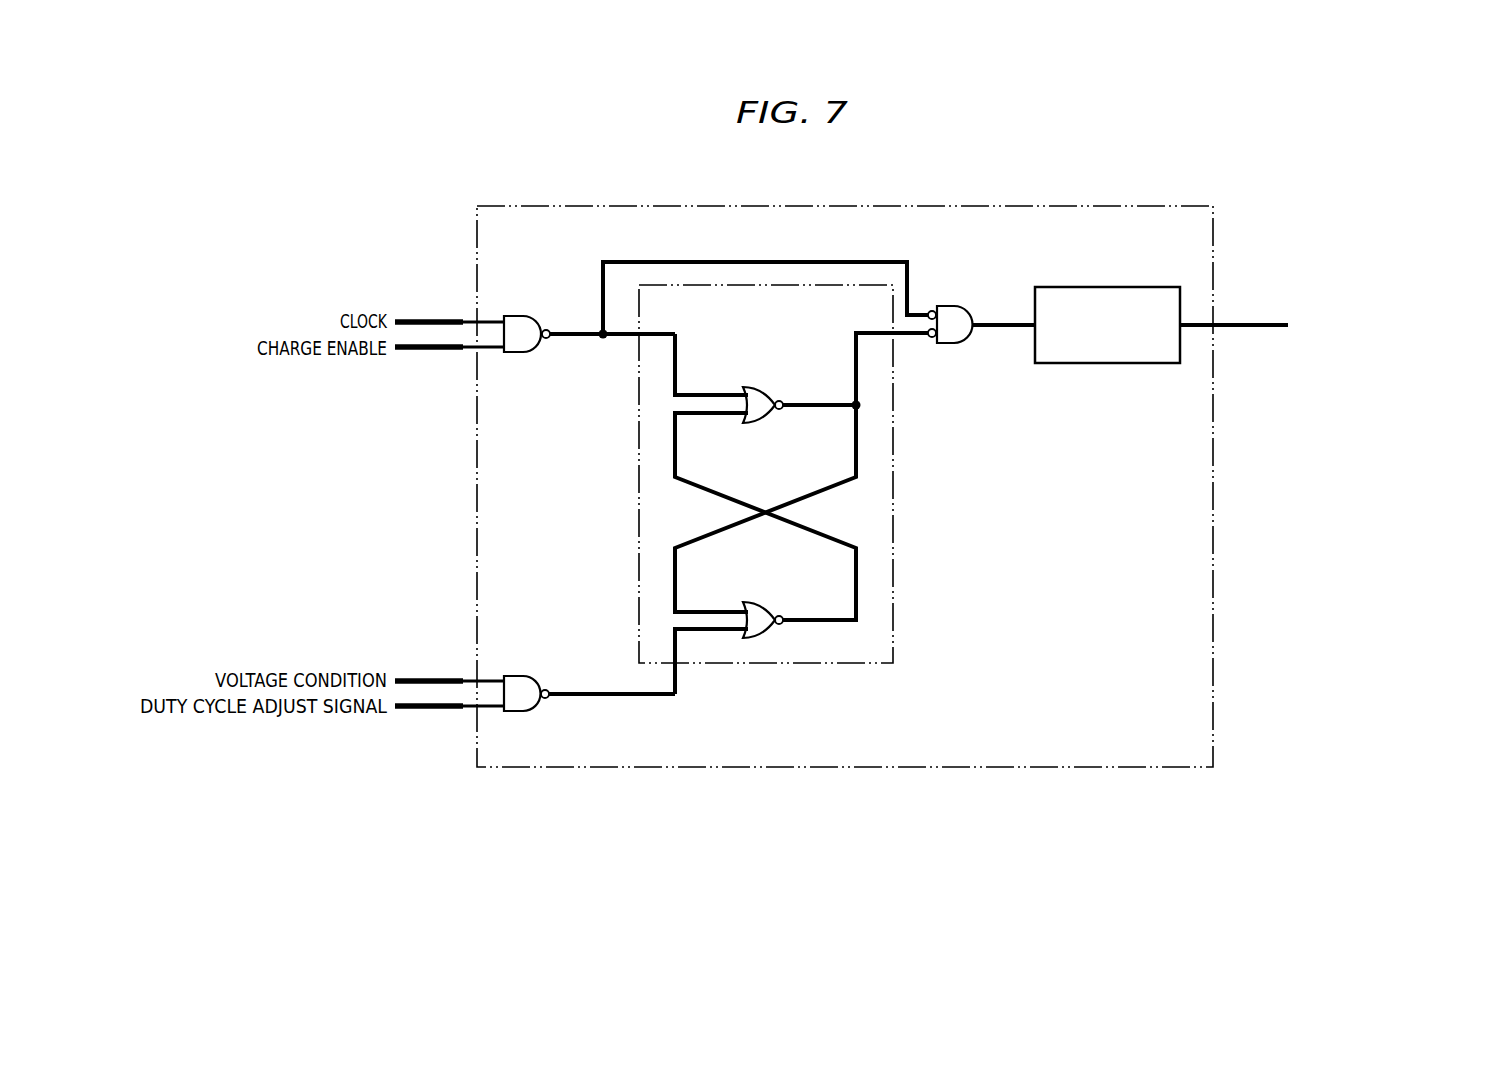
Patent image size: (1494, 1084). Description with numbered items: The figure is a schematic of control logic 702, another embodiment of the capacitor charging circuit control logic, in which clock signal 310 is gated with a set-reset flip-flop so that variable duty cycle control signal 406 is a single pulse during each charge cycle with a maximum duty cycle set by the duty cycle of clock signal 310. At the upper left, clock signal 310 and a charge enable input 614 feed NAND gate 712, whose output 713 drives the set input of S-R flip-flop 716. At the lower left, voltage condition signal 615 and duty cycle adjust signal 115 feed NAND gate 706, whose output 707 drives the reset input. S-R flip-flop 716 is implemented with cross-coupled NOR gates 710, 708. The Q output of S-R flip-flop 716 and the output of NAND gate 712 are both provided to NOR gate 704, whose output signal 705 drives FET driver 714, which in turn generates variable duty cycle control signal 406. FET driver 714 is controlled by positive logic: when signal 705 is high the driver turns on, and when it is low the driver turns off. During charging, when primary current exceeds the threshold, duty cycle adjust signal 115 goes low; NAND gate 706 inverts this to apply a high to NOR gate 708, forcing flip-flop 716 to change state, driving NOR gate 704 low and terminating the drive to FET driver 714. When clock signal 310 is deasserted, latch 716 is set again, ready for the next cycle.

The control logic 702 is at (1120, 768).
The S-R flip-flop 716 is at (827, 665).
The clock signal 310 is at (428, 318).
The AND gate 614 is at (426, 352).
The NAND gate 712 is at (522, 354).
The set signal line 713 is at (560, 330).
The NOR gate 710 is at (757, 390).
The NOR gate 708 is at (757, 605).
The NOR gate 704 is at (951, 305).
The signal 705 is at (1000, 328).
The FET driver 714 is at (1104, 287).
The variable duty cycle control signal 406 is at (1335, 350).
The voltage condition signal 615 is at (428, 677).
The duty cycle adjust signal 115 is at (426, 710).
The NAND gate 706 is at (520, 674).
The reset signal line 707 is at (601, 697).